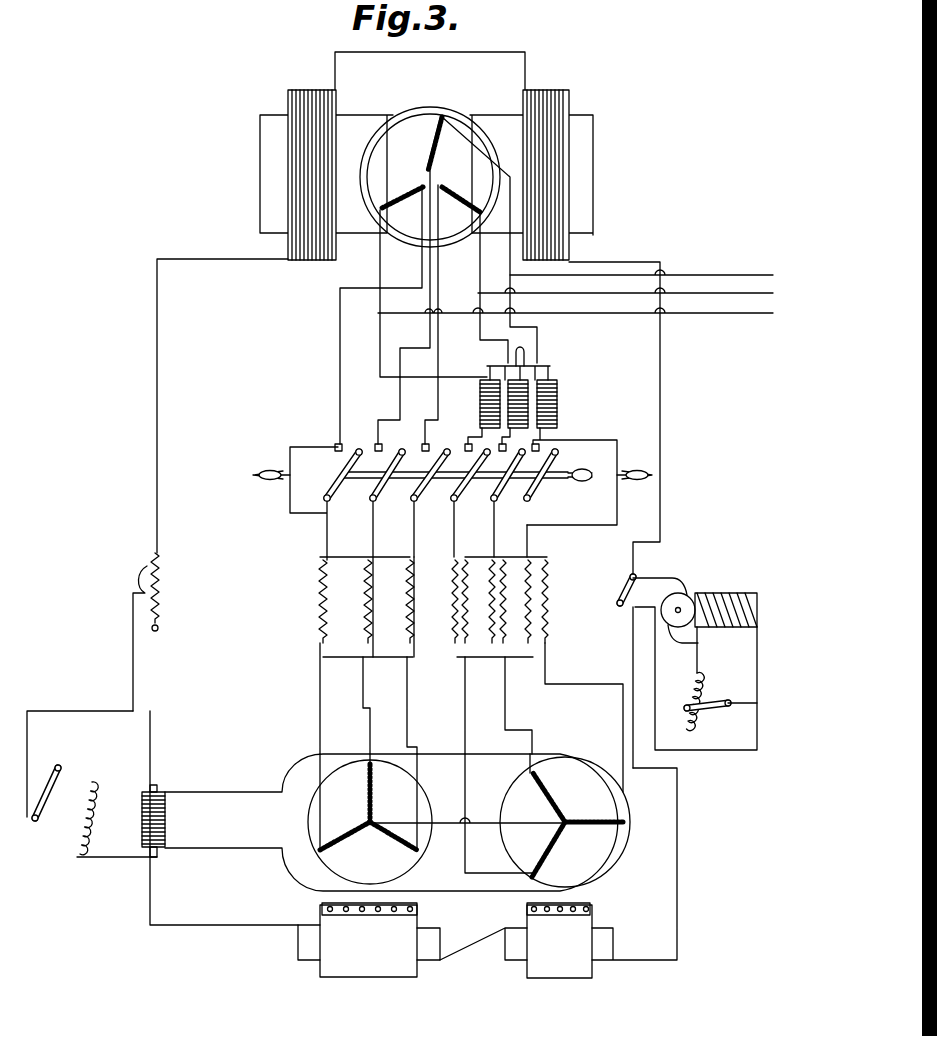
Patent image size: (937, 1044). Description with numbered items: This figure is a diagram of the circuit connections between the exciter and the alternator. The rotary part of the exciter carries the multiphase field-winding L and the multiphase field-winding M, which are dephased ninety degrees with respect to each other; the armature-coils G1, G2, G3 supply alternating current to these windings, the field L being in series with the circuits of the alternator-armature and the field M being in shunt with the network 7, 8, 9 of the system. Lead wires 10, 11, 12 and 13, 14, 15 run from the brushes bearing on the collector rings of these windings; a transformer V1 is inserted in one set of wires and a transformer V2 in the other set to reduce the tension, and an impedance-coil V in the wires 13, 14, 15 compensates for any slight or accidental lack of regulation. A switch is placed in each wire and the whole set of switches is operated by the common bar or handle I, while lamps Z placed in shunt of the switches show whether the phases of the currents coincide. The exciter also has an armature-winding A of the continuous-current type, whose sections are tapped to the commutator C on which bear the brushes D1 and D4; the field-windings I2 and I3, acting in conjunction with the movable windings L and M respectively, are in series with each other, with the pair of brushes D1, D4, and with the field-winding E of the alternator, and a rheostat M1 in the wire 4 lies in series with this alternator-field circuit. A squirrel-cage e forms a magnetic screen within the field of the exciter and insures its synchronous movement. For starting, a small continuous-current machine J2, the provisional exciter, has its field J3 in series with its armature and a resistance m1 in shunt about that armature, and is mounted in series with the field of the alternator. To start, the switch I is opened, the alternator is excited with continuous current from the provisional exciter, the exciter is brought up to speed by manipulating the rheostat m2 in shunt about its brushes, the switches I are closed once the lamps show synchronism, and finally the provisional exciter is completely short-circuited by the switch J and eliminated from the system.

The field-winding of the alternator E is at (428, 163).
The armature-coil G1 is at (401, 193).
The armature-coil G2 is at (461, 193).
The armature-coil G3 is at (442, 144).
The wire 4 is at (222, 406).
The network conductor 7 is at (641, 266).
The network conductor 8 is at (625, 289).
The network conductor 9 is at (575, 309).
The lead wire 10 is at (391, 490).
The lead wire 11 is at (356, 372).
The lead wire 12 is at (429, 371).
The lead wire 13 is at (424, 383).
The lead wire 14 is at (485, 384).
The lead wire 15 is at (524, 425).
The impedance-coil V is at (542, 435).
The switch bar or handle I is at (458, 472).
The lamp Z is at (452, 464).
The transformer V1 is at (368, 655).
The transformer V2 is at (537, 674).
The rheostat M1 is at (161, 632).
The rheostat m2 is at (117, 819).
The commutator C is at (165, 822).
The brush D1 is at (157, 786).
The brush D4 is at (157, 857).
The armature-winding A is at (391, 822).
The multiphase field-winding L is at (465, 819).
The multiphase field-winding M is at (547, 820).
The squirrel-cage magnetic screen e is at (417, 907).
The field-winding I2 is at (369, 941).
The field-winding I3 is at (558, 873).
The switch J is at (646, 623).
The continuous-current machine J2 is at (681, 606).
The field of continuous-current machine J3 is at (740, 593).
The resistance m1 is at (708, 702).